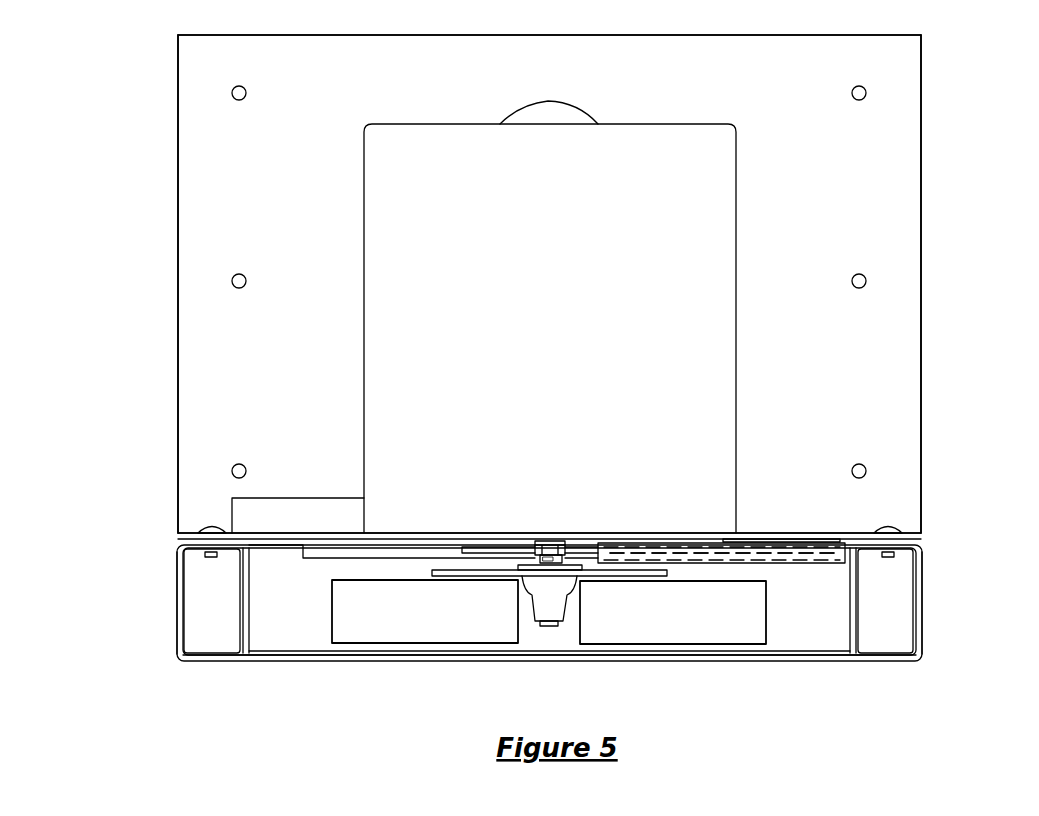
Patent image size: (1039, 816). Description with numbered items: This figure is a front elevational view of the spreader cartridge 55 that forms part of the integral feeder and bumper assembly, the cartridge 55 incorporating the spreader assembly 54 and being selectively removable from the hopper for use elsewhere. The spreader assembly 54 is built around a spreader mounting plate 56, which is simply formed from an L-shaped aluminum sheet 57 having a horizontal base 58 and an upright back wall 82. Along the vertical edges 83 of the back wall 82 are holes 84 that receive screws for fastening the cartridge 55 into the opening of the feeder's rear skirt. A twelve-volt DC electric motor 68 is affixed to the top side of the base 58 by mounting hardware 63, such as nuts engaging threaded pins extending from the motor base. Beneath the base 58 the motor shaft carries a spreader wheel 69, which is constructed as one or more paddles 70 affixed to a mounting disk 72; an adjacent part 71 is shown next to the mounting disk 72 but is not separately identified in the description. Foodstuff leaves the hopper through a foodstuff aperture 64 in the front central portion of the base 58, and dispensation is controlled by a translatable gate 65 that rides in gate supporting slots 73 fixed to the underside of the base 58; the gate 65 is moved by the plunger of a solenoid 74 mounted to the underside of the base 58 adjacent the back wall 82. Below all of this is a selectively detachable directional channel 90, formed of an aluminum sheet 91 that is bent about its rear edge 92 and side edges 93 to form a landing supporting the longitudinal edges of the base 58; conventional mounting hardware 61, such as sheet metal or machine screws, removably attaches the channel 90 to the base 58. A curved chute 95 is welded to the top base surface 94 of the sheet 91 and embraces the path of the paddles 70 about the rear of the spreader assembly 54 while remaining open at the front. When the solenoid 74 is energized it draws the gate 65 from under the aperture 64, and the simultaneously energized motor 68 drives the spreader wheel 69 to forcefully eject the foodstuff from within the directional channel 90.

The spreader assembly 54 is at (953, 143).
The cartridge 55 is at (145, 353).
The spreader mounting plate 56 is at (897, 362).
The L-shaped aluminum sheet 57 is at (200, 139).
The base 58 is at (383, 537).
The mounting hardware 61 is at (212, 528).
The mounting hardware 63 is at (548, 542).
The foodstuff aperture 64 is at (757, 538).
The translatable gate 65 is at (787, 550).
The electric motor 68 is at (390, 218).
The spreader wheel 69 is at (457, 627).
The paddles 70 is at (673, 612).
The connector bar 71 is at (615, 576).
The mounting disk 72 is at (547, 610).
The gate supporting slots 73 is at (630, 545).
The solenoid 74 is at (259, 512).
The back wall 82 is at (859, 284).
The vertical edges 83 is at (178, 203).
The holes 84 is at (242, 92).
The directional channel 90 is at (147, 616).
The aluminum sheet 91 is at (213, 657).
The rear edge 92 is at (208, 592).
The side edges 93 is at (180, 640).
The base surface 94 is at (306, 640).
The curved chute 95 is at (245, 612).